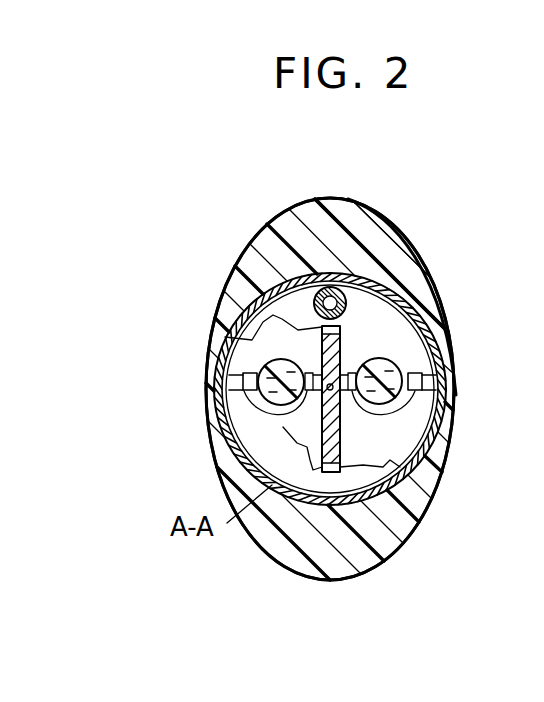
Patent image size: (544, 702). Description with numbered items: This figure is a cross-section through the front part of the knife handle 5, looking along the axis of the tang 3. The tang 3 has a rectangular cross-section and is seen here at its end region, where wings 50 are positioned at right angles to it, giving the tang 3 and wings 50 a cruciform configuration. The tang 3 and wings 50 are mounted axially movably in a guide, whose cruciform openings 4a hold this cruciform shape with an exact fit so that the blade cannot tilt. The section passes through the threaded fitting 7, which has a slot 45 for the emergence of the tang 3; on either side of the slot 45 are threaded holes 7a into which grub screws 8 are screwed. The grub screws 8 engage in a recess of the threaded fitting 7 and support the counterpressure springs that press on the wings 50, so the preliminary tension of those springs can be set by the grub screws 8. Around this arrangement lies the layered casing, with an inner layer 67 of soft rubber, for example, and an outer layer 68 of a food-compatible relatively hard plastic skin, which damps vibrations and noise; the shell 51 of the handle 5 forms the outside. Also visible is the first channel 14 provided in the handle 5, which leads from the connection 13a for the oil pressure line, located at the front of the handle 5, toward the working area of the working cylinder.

The handle 5 is at (345, 212).
The shell 51 is at (382, 205).
The first channel 14 is at (312, 262).
The connection 13a is at (316, 292).
The inner layer 67 is at (388, 262).
The outer layer 68 is at (417, 285).
The threaded fitting 7 is at (402, 333).
The threaded holes 7a is at (375, 360).
The grub screws 8 is at (237, 420).
The slot 45 is at (423, 370).
The cruciform openings 4a is at (240, 308).
The wings 50 is at (372, 432).
The tang 3 is at (253, 533).